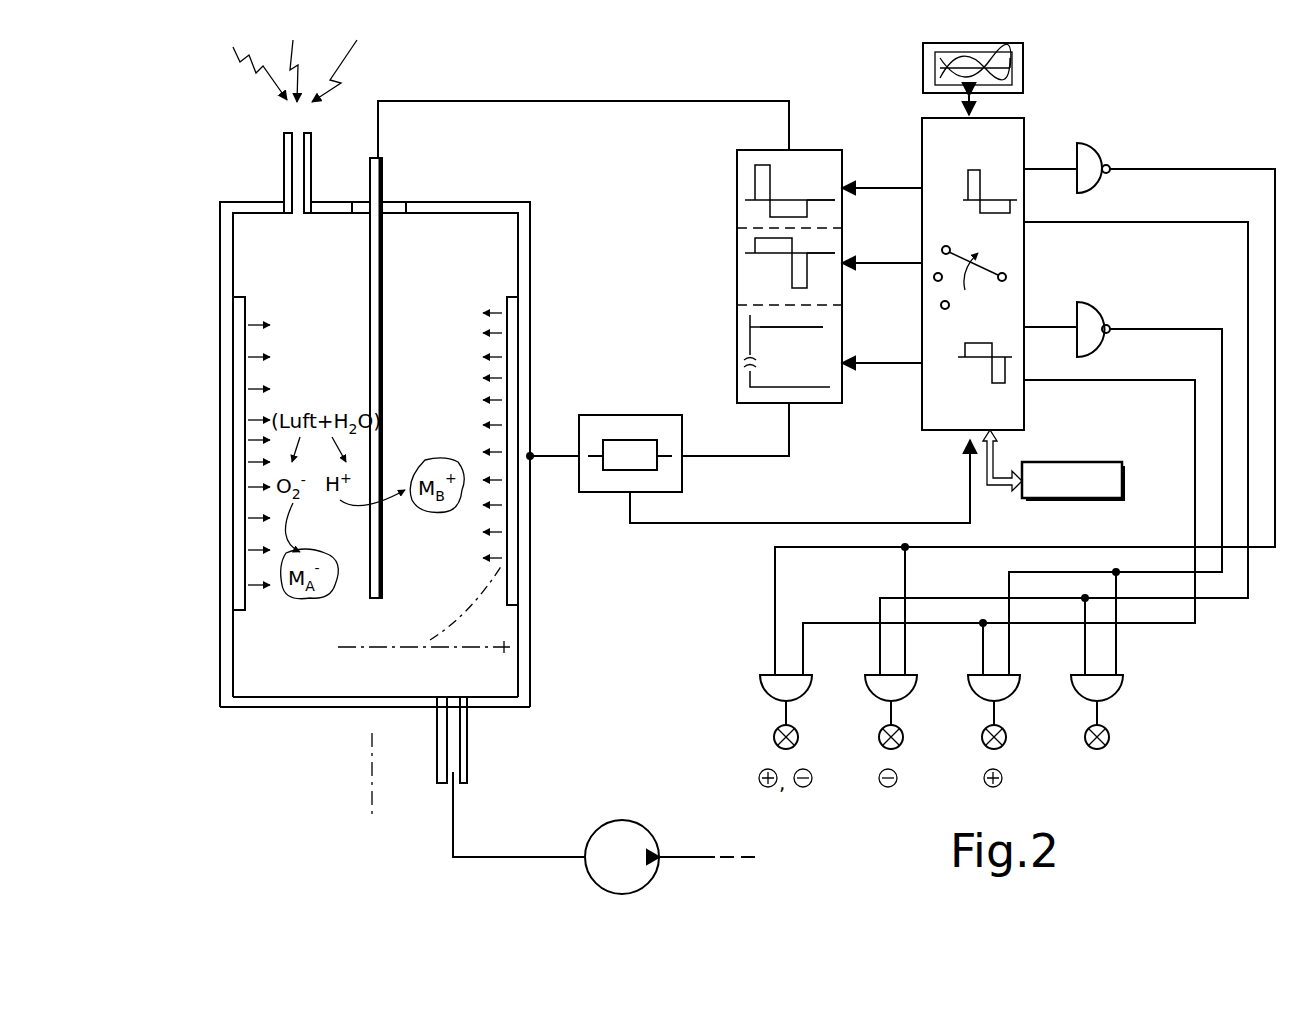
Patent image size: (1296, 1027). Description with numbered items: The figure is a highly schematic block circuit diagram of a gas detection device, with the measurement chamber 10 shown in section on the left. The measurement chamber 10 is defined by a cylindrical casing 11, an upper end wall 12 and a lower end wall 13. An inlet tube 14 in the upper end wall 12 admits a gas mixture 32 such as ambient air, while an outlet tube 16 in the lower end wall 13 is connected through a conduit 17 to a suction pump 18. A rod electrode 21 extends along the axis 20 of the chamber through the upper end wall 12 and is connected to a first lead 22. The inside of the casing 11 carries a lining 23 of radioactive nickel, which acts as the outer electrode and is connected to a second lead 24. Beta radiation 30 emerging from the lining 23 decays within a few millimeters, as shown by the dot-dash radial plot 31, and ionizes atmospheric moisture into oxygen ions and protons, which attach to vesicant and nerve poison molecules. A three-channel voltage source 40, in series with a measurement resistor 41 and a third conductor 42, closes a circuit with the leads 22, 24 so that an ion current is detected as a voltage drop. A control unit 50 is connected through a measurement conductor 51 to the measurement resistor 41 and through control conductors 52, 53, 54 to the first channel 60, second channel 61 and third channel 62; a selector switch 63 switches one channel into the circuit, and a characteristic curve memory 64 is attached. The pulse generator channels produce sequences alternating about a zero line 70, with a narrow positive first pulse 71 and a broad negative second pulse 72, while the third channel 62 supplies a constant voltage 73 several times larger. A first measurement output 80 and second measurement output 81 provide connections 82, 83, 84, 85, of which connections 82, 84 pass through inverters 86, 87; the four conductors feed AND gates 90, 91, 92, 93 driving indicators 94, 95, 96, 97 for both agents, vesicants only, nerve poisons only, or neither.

The measurement chamber 10 is at (210, 240).
The cylindrical casing 11 is at (232, 657).
The upper end wall 12 is at (257, 210).
The lower end wall 13 is at (262, 706).
The inlet tube 14 is at (300, 167).
The outlet tube 16 is at (447, 737).
The conduit 17 is at (453, 827).
The suction pump 18 is at (620, 835).
The axis 20 is at (372, 778).
The rod electrode 21 is at (370, 398).
The first lead 22 is at (505, 101).
The lining 23 is at (520, 318).
The second lead 24 is at (552, 460).
The beta radiation 30 is at (258, 322).
The radial intensity plot 31 is at (463, 607).
The gas mixture 32 is at (282, 77).
The three-channel voltage source 40 is at (733, 164).
The measurement resistor 41 is at (640, 422).
The third conductor 42 is at (790, 436).
The control unit 50 is at (918, 139).
The measurement conductor 51 is at (858, 522).
The control conductor 52 is at (893, 190).
The control conductor 53 is at (893, 265).
The control conductor 54 is at (890, 366).
The first channel 60 is at (745, 217).
The second channel 61 is at (745, 282).
The third channel 62 is at (745, 342).
The selector switch 63 is at (978, 282).
The characteristic curve memory 64 is at (985, 45).
The zero line 70 is at (825, 200).
The first pulse 71 is at (765, 180).
The second pulse 72 is at (807, 210).
The constant voltage 73 is at (790, 327).
The first measurement output 80 is at (1040, 150).
The second measurement output 81 is at (1045, 320).
The connection 82 is at (1026, 172).
The connection 83 is at (1026, 225).
The connection 84 is at (1026, 330).
The connection 85 is at (1026, 385).
The inverter 86 is at (1090, 160).
The inverter 87 is at (1090, 320).
The AND gate 90 is at (770, 690).
The AND gate 91 is at (872, 690).
The AND gate 92 is at (975, 688).
The AND gate 93 is at (1080, 688).
The indicator 94 is at (799, 738).
The second indicator 95 is at (904, 738).
The third indicator 96 is at (1007, 738).
The fourth indicator 97 is at (1110, 738).